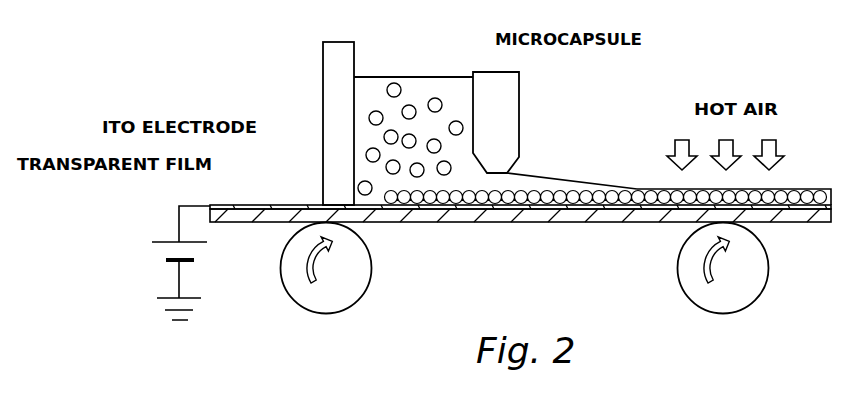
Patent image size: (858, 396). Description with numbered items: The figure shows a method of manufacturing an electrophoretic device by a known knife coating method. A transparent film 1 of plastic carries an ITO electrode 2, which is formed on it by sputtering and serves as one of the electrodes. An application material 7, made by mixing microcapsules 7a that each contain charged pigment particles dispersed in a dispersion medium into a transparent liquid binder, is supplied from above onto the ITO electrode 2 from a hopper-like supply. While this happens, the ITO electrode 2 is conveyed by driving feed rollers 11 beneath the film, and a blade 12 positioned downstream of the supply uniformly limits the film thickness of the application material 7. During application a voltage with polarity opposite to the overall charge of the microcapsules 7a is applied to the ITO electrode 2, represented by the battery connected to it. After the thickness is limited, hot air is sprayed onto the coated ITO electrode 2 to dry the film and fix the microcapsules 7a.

The transparent film 1 is at (259, 217).
The ITO electrode 2 is at (298, 206).
The application material 7 is at (414, 90).
The microcapsule 7a is at (437, 98).
The feed roller 11 is at (360, 272).
The blade 12 is at (511, 115).